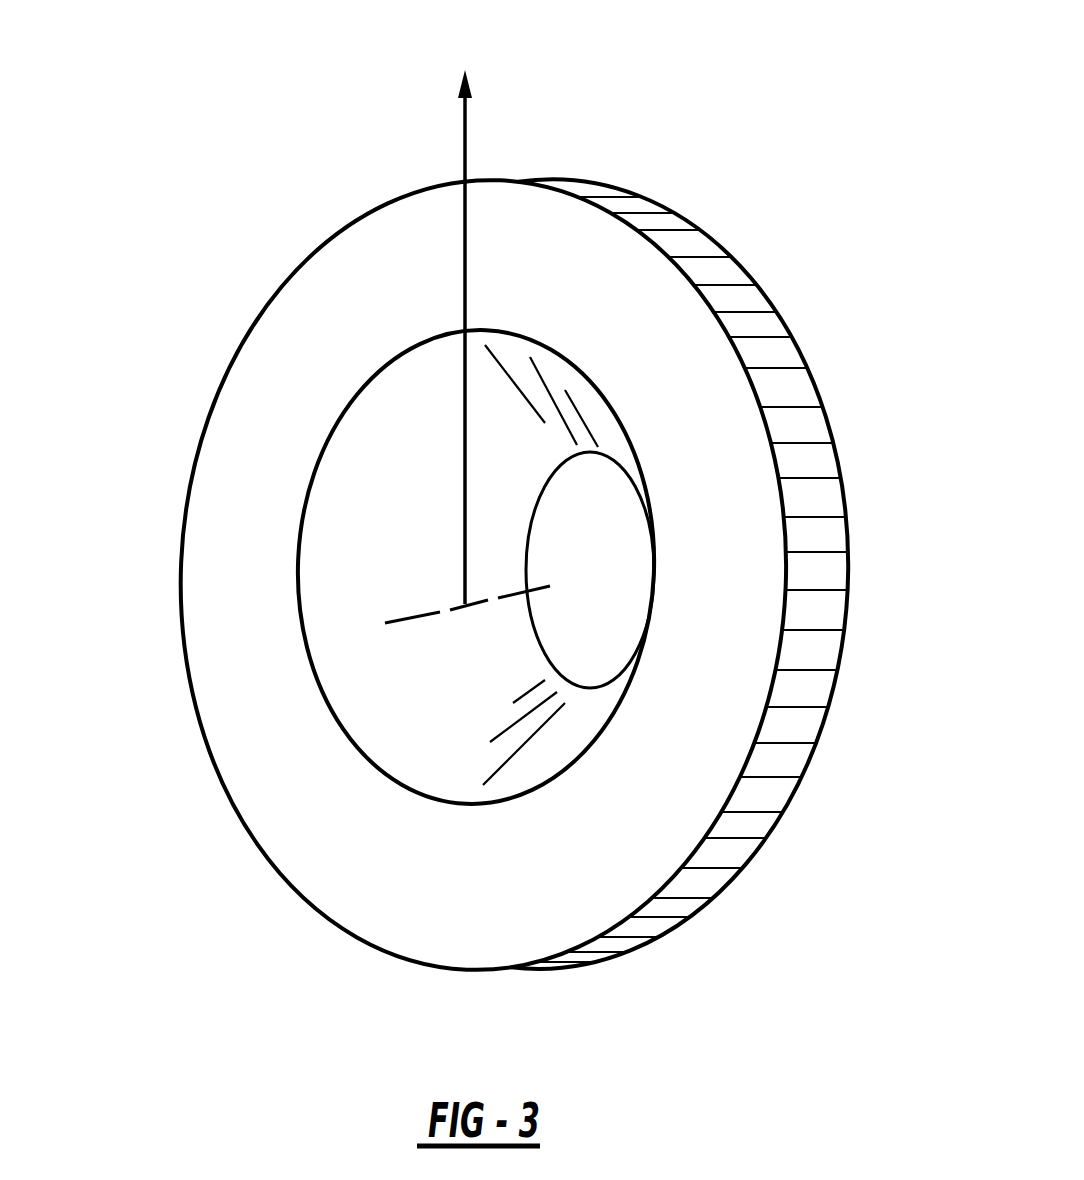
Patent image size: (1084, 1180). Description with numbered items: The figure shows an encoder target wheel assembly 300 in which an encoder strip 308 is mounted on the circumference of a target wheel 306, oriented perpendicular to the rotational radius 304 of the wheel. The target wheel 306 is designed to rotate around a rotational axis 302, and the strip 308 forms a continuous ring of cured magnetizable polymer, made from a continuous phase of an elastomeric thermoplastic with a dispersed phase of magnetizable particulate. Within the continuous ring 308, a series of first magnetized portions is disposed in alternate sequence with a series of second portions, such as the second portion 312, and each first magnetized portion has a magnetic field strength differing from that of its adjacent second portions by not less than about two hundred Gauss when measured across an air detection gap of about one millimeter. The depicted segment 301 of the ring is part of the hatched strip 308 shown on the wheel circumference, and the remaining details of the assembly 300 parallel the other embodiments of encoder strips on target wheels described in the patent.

The encoder target wheel assembly 300 is at (496, 503).
The rim segment 301 is at (861, 552).
The rotational axis 302 is at (412, 628).
The rotational radius 304 is at (458, 262).
The target wheel 306 is at (223, 600).
The encoder strip 308 is at (720, 571).
The second portion 312 is at (817, 590).